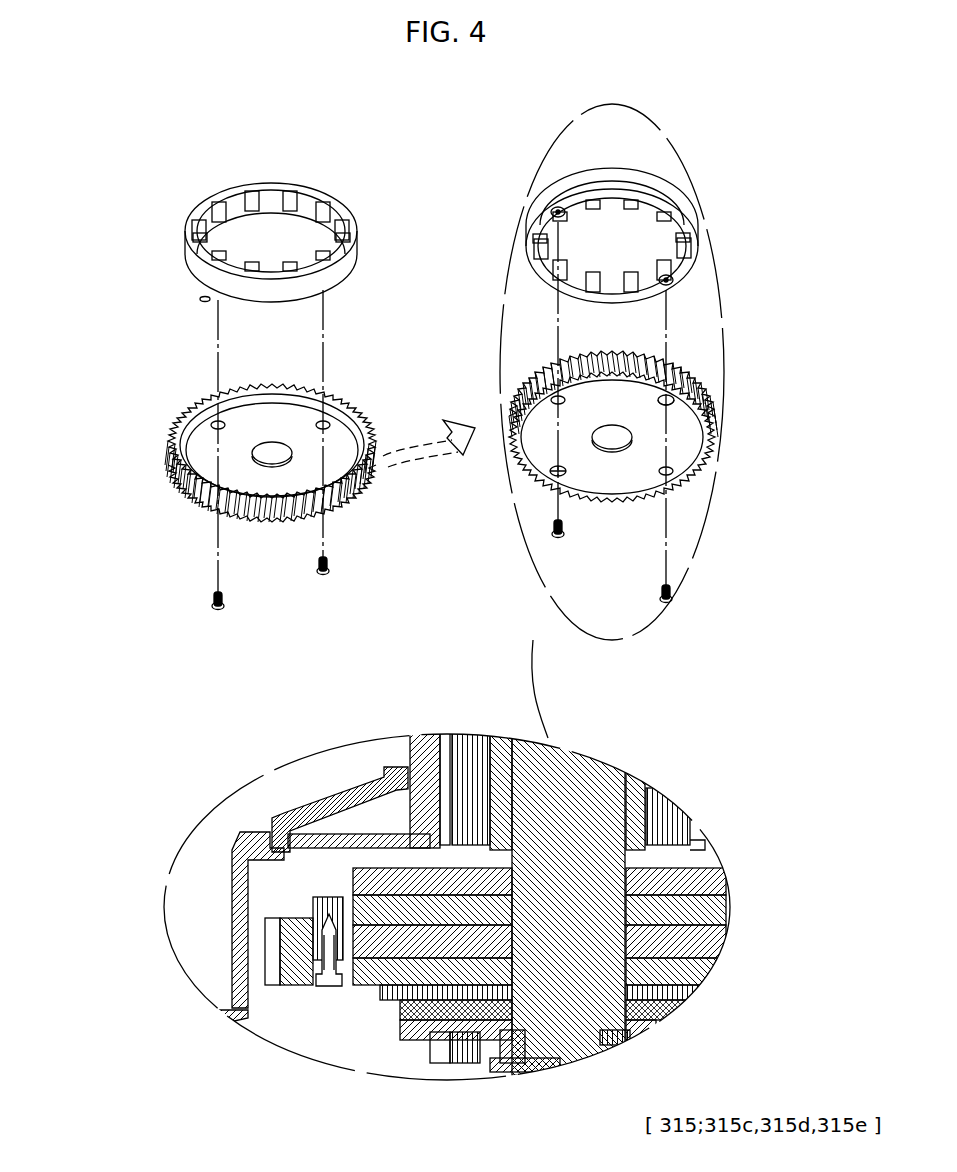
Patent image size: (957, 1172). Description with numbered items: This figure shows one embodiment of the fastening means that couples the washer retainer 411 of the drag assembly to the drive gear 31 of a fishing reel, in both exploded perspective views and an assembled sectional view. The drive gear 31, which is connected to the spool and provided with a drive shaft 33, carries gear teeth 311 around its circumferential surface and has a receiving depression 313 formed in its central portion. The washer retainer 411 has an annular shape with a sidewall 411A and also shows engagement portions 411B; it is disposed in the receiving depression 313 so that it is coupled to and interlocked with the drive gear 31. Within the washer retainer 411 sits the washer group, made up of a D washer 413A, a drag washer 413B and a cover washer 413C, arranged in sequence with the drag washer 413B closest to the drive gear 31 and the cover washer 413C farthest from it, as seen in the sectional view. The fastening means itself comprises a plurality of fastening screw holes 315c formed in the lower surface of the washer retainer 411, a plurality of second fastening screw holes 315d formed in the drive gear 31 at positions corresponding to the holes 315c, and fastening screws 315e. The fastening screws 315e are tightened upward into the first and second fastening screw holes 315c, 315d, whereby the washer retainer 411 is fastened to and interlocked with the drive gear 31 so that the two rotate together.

The drive gear 31 is at (447, 634).
The gear teeth 311 is at (367, 487).
The receiving depression 313 is at (285, 422).
The fastening screw holes 315c is at (205, 297).
The second fastening screw holes 315d is at (328, 422).
The fastening screws 315e is at (330, 565).
The drive shaft 33 is at (597, 762).
The washer retainer 411 is at (440, 489).
The sidewall 411A is at (345, 268).
The engagement protrusion 411B is at (289, 199).
The D washer 413A is at (357, 897).
The drag washer 413B is at (387, 900).
The cover washer 413C is at (437, 878).